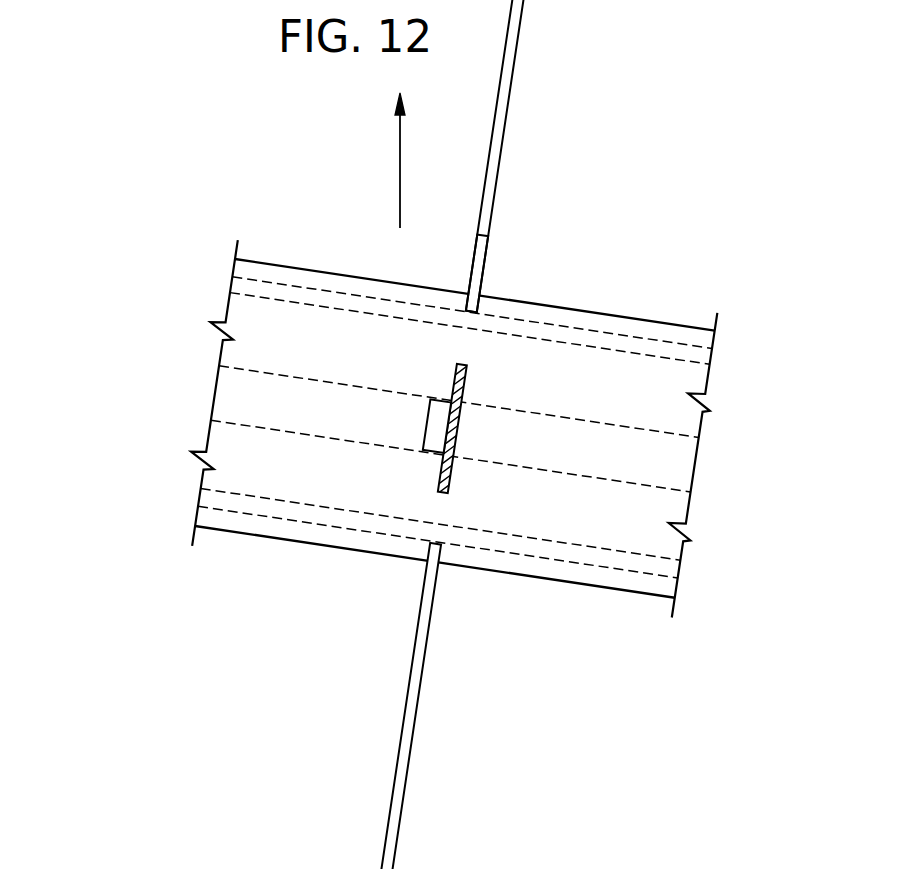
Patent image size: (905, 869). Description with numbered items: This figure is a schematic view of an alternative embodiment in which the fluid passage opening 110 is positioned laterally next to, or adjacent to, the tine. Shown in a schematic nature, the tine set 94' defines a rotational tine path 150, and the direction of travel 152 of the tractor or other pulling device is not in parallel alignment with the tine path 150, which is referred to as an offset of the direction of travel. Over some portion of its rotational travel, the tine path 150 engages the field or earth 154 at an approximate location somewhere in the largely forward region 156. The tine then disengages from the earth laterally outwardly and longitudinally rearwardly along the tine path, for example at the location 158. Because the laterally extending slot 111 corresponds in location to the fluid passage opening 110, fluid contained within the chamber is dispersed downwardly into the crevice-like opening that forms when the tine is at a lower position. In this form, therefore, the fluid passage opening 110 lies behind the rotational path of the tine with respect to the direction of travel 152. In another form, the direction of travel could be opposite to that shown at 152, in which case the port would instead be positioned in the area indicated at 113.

The tine set 94' is at (390, 434).
The fluid passage opening 110 is at (425, 422).
The laterally extending slot 111 is at (273, 393).
The area for port when direction of travel is reversed 113 is at (463, 428).
The rotational tine path 150 is at (505, 120).
The direction of travel 152 is at (399, 163).
The field or earth 154 is at (660, 268).
The forward region of engagement 156 is at (485, 213).
The location of disengagement 158 is at (415, 652).